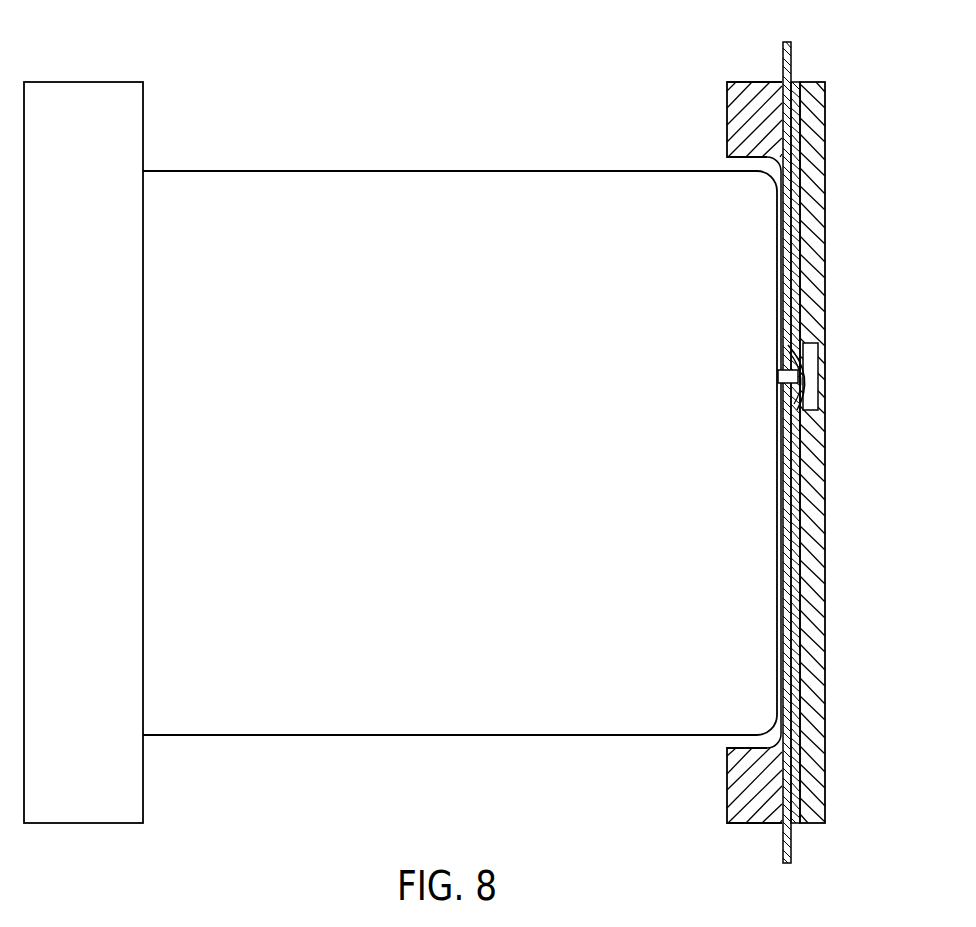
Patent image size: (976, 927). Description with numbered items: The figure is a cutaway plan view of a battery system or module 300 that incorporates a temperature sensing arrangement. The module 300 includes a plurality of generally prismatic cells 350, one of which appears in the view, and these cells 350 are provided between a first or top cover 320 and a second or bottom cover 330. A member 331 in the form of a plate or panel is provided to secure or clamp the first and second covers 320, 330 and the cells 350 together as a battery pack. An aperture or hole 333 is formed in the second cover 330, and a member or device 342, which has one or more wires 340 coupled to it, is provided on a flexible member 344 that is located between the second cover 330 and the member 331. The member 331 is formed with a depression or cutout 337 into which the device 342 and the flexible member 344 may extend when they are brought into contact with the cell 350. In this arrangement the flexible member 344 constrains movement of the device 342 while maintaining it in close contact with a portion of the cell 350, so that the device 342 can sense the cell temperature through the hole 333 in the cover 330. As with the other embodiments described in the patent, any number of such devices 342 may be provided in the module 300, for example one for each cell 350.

The battery system or module 300 is at (475, 90).
The first cover 320 is at (98, 100).
The second cover 330 is at (740, 88).
The member or element in the form of a plate or panel 331 is at (815, 110).
The aperture or hole 333 is at (777, 353).
The depression or cutout 337 is at (810, 350).
The wires 340 is at (792, 52).
The member or device 342 is at (783, 378).
The flexible member 344 is at (796, 452).
The generally prismatic cells 350 is at (480, 457).